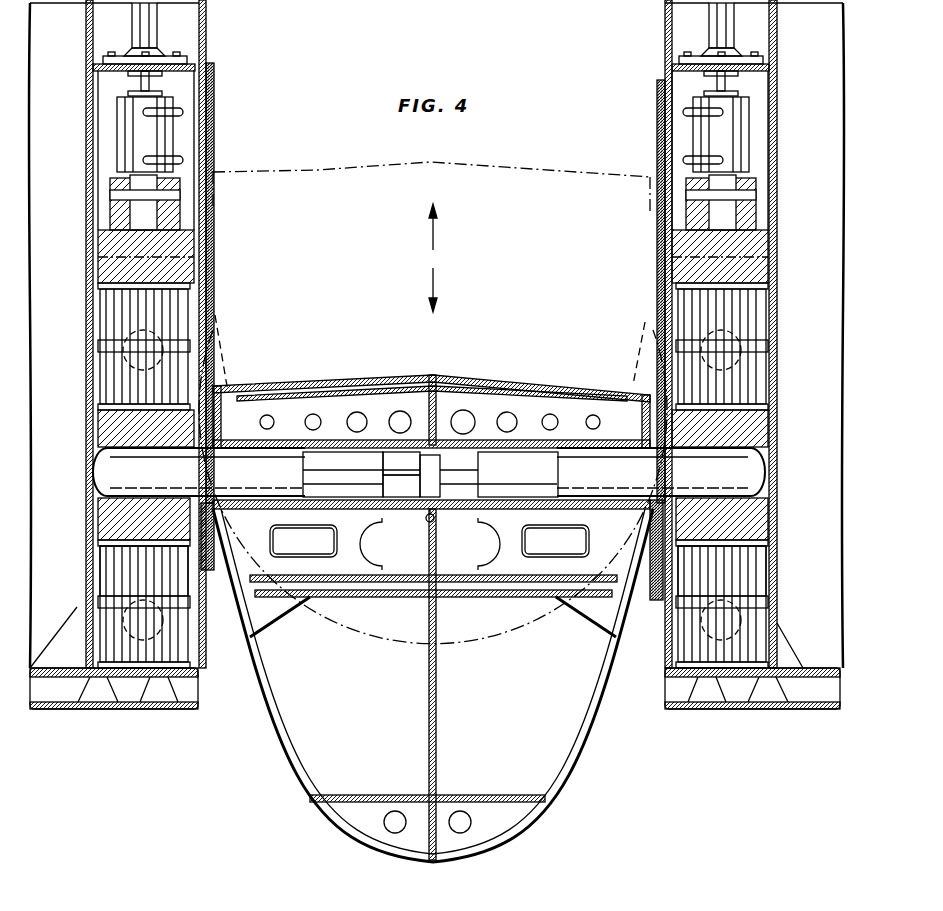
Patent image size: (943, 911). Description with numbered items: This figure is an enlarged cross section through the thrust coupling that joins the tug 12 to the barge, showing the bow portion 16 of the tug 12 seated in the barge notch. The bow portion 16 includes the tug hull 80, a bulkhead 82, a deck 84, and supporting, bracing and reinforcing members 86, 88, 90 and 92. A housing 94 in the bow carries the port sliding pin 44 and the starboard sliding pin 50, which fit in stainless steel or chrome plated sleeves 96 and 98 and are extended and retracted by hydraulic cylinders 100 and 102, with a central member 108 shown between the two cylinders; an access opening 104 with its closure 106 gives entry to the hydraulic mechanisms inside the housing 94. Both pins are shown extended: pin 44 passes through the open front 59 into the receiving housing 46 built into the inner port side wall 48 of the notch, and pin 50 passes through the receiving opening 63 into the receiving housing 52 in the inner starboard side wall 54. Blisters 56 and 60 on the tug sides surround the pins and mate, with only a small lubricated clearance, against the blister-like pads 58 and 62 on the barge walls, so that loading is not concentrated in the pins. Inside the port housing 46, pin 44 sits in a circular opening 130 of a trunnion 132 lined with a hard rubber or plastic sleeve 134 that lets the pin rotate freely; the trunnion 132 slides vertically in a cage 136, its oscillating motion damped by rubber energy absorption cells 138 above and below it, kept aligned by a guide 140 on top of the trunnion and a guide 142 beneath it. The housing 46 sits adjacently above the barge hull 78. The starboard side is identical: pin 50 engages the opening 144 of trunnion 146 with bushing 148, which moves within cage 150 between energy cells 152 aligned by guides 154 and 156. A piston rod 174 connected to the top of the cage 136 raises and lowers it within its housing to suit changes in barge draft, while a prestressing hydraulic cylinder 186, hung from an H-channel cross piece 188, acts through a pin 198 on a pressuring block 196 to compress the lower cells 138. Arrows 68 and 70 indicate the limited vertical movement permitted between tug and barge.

The tug 12 is at (270, 756).
The bow portion 16 is at (465, 378).
The sliding reciprocal cylindrical pin 44 is at (196, 484).
The receiving housing 46 is at (85, 28).
The inner port side wall 48 is at (207, 25).
The sliding reciprocal cylindrical pin 50 is at (694, 484).
The receiving housing 52 is at (779, 28).
The inner starboard side wall 54 is at (665, 32).
The blister 56 is at (210, 572).
The blister-like pad 58 is at (211, 134).
The open front 59 is at (205, 326).
The blister 60 is at (652, 598).
The blister-like pad 62 is at (657, 124).
The receiving opening 63 is at (655, 340).
The arrow 68 is at (432, 220).
The arrow 70 is at (434, 280).
The hull 78 is at (103, 710).
The hull 80 is at (520, 826).
The bulkhead 82 is at (428, 708).
The deck 84 is at (448, 578).
The supporting member 86 is at (462, 795).
The bracing member 88 is at (272, 615).
The reinforcing member 90 is at (360, 597).
The reinforcing member 92 is at (274, 696).
The housing 94 is at (393, 440).
The sleeve 96 is at (338, 520).
The sleeve 98 is at (530, 512).
The hydraulic cylinder 100 is at (358, 472).
The hydraulic cylinder 102 is at (496, 476).
The access opening 104 is at (401, 486).
The closure 106 is at (420, 520).
The central coupling unit 108 is at (430, 473).
The circular opening 130 is at (100, 464).
The trunnion 132 is at (108, 426).
The inner sleeve 134 is at (100, 490).
The cage 136 is at (117, 140).
The rubber energy absorption cell 138 is at (112, 322).
The guide 140 is at (100, 383).
The guide 142 is at (110, 572).
The circular opening 144 is at (762, 458).
The trunnion 146 is at (750, 430).
The bushing 148 is at (755, 492).
The cage 150 is at (760, 152).
The rubber energy cell 152 is at (755, 325).
The guide 154 is at (768, 378).
The guide 156 is at (768, 574).
The piston rod 174 is at (137, 18).
The hydraulic cylinder 186 is at (125, 156).
The cross piece 188 is at (141, 81).
The pressuring block 196 is at (115, 252).
The pin 198 is at (118, 200).